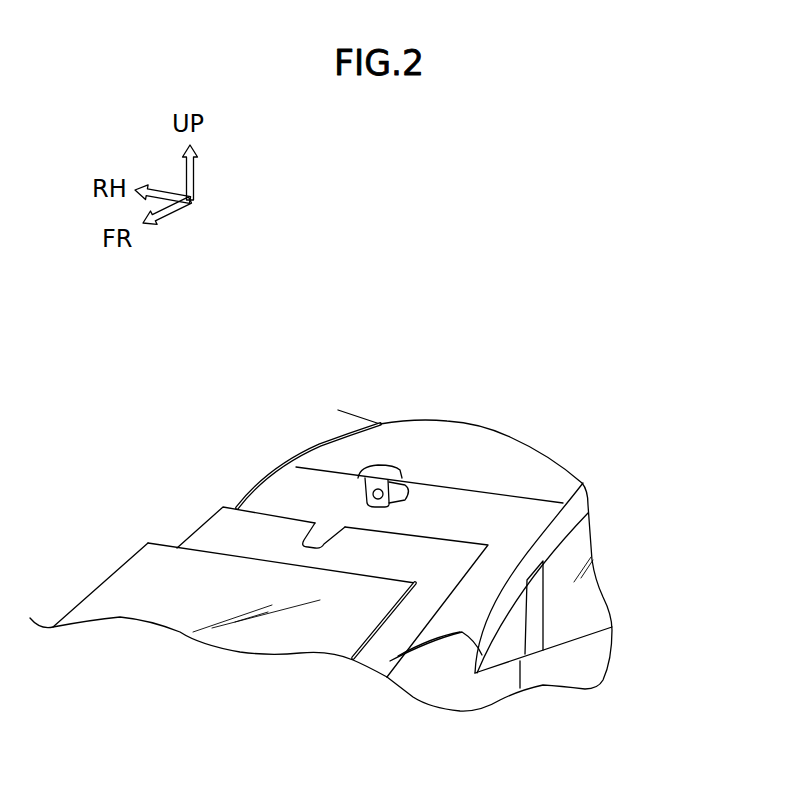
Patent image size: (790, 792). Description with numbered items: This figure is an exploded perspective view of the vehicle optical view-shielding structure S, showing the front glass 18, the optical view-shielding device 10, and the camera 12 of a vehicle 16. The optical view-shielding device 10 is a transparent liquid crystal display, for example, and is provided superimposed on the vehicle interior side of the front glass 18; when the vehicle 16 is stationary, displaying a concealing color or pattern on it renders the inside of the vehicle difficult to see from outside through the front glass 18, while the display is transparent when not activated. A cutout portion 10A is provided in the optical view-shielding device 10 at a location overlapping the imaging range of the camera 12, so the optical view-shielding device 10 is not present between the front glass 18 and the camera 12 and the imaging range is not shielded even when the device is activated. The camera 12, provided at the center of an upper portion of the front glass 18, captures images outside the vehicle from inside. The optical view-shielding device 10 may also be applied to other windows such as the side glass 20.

The vehicle optical view-shielding structure S is at (170, 439).
The optical view-shielding device 10 is at (193, 518).
The cutout portion 10A is at (320, 548).
The camera 12 is at (400, 468).
The vehicle 16 is at (408, 372).
The front glass 18 is at (131, 558).
The side glass 20 is at (583, 598).